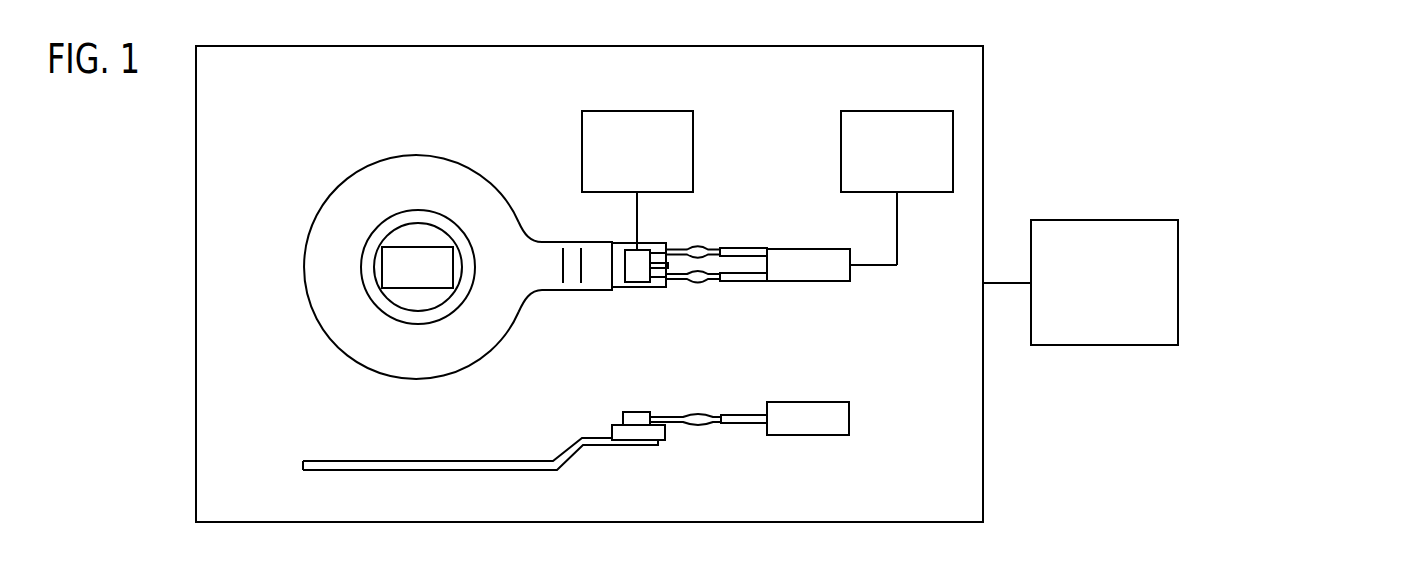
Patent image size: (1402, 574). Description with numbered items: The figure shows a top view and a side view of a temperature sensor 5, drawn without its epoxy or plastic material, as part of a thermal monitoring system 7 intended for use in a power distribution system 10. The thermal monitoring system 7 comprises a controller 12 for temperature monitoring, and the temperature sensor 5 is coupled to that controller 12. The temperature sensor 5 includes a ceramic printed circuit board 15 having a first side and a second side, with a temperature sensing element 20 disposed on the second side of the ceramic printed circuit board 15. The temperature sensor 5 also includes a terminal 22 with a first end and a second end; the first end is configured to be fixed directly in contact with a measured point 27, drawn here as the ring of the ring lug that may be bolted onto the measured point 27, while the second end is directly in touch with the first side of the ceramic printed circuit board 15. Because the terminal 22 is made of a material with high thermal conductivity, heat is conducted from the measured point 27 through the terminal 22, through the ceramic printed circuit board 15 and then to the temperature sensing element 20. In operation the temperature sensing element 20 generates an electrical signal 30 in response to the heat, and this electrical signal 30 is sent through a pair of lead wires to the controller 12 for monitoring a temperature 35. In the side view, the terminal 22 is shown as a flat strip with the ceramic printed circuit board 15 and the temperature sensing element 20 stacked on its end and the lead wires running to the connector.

The temperature sensor 5 is at (438, 292).
The thermal monitoring system 7 is at (983, 78).
The power distribution system 10 is at (1105, 220).
The controller 12 is at (841, 148).
The ceramic printed circuit board 15 is at (643, 286).
The temperature sensing element 20 is at (640, 254).
The terminal 22 is at (448, 292).
The measured point 27 is at (392, 306).
The electrical signal 30 is at (582, 155).
The temperature 35 is at (419, 290).